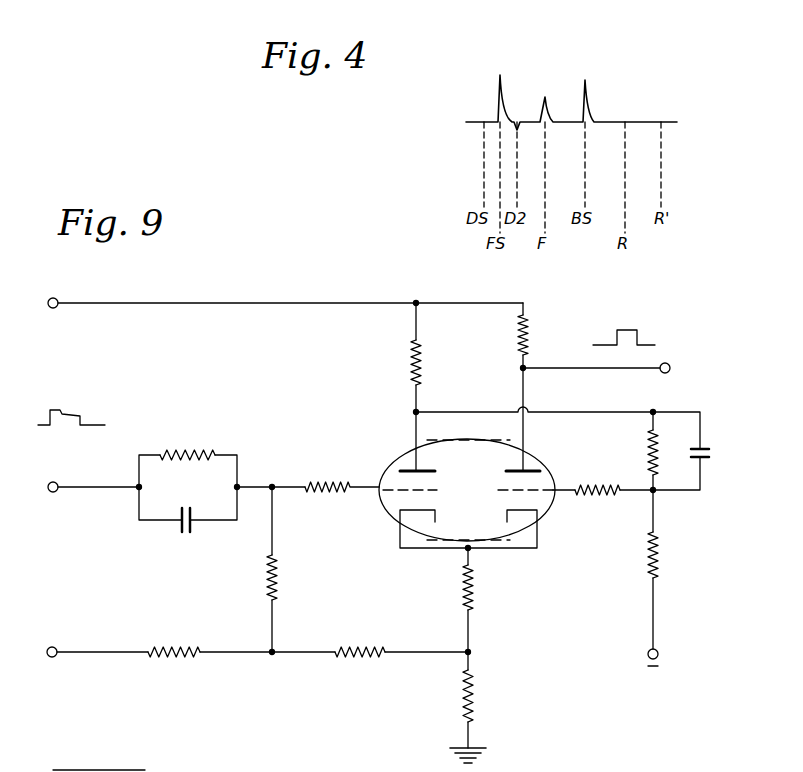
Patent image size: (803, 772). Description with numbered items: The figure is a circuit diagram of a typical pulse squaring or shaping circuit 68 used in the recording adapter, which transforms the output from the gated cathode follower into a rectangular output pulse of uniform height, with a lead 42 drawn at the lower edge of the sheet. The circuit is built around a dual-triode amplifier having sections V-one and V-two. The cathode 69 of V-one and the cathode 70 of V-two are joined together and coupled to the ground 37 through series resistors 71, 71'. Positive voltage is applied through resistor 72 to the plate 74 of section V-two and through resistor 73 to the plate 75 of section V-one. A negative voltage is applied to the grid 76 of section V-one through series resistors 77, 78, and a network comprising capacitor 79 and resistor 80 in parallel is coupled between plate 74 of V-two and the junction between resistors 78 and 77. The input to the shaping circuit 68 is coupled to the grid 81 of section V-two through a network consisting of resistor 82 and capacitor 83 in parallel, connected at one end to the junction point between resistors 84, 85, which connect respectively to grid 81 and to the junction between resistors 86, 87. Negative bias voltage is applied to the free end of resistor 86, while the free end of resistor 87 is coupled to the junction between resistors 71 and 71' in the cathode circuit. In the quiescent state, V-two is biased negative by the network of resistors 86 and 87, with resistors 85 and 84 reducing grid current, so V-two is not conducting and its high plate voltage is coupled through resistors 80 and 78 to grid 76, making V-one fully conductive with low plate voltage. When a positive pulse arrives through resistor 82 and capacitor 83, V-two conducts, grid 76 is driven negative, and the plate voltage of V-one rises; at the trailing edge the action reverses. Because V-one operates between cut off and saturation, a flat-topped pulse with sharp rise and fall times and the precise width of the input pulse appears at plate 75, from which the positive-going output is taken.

The shaping circuit 68 is at (379, 480).
The cathode 69 is at (502, 552).
The cathode 70 is at (432, 552).
The series resistor 71 is at (492, 600).
The series resistor 71' is at (502, 700).
The resistor 72 is at (424, 367).
The resistor 73 is at (531, 333).
The plate 74 is at (415, 437).
The plate 75 is at (527, 438).
The grid 76 is at (558, 497).
The series resistor 77 is at (660, 556).
The series resistor 78 is at (600, 497).
The capacitor 79 is at (712, 456).
The resistor 80 is at (645, 454).
The grid 81 is at (393, 487).
The resistor 82 is at (190, 447).
The capacitor 83 is at (188, 532).
The resistor 84 is at (328, 497).
The resistor 85 is at (280, 573).
The resistor 86 is at (177, 662).
The resistor 87 is at (361, 663).
The ground 37 is at (490, 760).
The conductor 42 is at (133, 770).